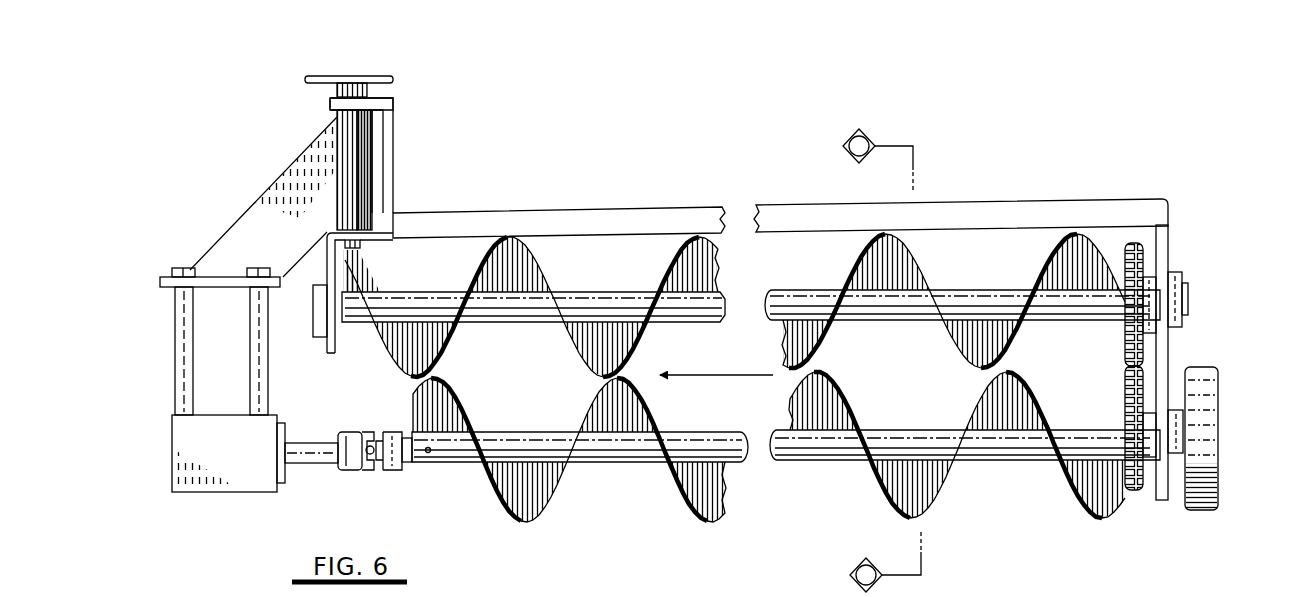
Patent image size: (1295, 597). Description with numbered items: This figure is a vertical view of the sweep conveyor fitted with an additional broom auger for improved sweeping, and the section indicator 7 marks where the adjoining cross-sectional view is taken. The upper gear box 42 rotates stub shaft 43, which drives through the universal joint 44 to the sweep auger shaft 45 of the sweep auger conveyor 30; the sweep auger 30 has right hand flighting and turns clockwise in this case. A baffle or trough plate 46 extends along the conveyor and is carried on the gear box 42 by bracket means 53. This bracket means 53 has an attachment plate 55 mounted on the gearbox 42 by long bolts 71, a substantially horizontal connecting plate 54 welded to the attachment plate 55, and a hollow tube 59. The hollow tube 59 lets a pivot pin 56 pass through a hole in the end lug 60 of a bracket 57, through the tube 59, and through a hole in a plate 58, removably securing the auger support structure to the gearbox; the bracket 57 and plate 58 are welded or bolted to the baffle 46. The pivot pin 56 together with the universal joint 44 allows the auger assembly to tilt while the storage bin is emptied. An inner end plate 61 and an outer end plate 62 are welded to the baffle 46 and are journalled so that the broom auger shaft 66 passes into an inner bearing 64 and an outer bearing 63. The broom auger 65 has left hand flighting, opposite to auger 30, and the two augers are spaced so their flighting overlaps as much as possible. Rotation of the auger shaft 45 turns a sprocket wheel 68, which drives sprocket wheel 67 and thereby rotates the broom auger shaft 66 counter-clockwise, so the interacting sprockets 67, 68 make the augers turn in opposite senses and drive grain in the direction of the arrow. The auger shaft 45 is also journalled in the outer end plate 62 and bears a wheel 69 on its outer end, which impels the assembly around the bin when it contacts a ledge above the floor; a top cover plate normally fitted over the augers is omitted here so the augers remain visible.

The section line 7- 7 is at (882, 360).
The sweep auger conveyor 30 is at (597, 405).
The upper gear box 42 is at (250, 466).
The stub shaft 43 is at (318, 465).
The universal joint 44 is at (377, 472).
The sweep auger shaft 45 is at (613, 448).
The baffle or trough plate 46 is at (592, 218).
The bracket means 53 is at (248, 202).
The connecting plate 54 is at (243, 220).
The attachment plate 55 is at (213, 270).
The pivot pin 56 is at (380, 80).
The bracket 57 is at (398, 166).
The plate 58 is at (361, 247).
The hollow tube 59 is at (352, 130).
The end lug 60 is at (380, 100).
The inner end plate 61 is at (333, 352).
The outer end plate 62 is at (1169, 360).
The outer bearing 63 is at (1189, 274).
The inner bearing 64 is at (320, 340).
The broom auger 65 is at (552, 252).
The broom auger shaft 66 is at (612, 300).
The sprocket wheel 67 is at (1122, 326).
The sprocket wheel 68 is at (1123, 407).
The wheel 69 is at (1200, 407).
The long bolts 71 is at (181, 321).